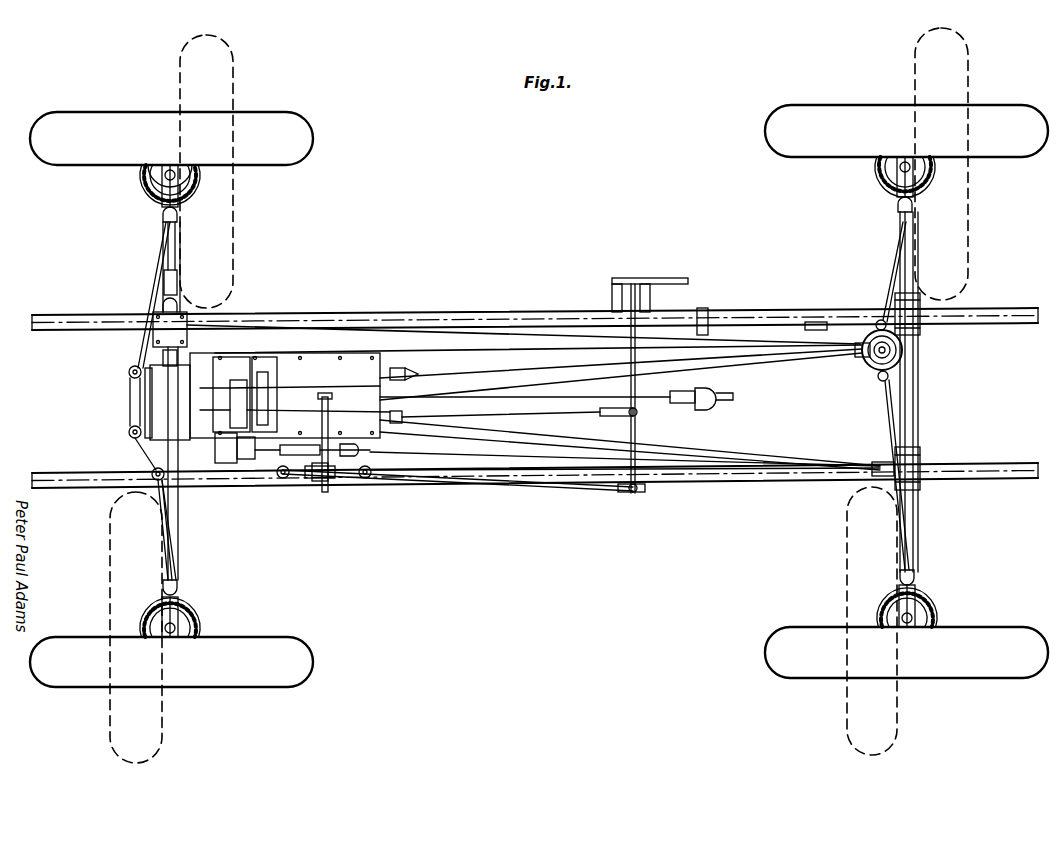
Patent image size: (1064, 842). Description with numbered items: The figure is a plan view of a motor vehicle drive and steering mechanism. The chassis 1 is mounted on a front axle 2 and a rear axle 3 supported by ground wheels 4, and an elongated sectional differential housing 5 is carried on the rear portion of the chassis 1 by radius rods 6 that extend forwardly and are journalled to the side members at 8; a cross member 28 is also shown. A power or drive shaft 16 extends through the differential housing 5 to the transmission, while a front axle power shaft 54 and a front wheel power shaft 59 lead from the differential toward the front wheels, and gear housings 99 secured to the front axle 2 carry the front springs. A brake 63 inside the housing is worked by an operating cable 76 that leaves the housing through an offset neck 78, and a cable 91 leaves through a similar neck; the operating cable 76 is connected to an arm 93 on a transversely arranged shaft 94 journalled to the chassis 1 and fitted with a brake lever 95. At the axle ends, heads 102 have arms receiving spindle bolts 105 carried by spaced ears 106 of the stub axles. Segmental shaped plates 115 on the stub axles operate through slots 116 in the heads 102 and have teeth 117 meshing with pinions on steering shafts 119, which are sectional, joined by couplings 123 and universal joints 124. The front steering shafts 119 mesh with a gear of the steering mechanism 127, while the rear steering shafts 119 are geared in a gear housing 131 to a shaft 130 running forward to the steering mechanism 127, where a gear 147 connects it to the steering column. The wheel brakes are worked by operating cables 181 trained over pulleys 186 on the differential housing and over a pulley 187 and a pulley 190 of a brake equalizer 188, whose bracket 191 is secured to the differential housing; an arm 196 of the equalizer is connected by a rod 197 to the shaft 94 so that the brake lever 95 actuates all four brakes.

The chassis 1 is at (770, 312).
The front axle 2 is at (918, 550).
The rear axle 3 is at (180, 553).
The ground wheels 4 is at (280, 115).
The differential housing 5 is at (352, 362).
The radius rods 6 is at (505, 348).
The radius rod journal 8 is at (708, 318).
The power or drive shaft 16 is at (590, 397).
The frame cross member 28 is at (290, 488).
The front axle power shaft 54 is at (812, 322).
The front wheel power shaft 59 is at (825, 472).
The brake 63 is at (235, 378).
The operating cable 76 is at (300, 384).
The offset neck 78 is at (235, 395).
The cable 91 is at (392, 370).
The arm 93 is at (640, 416).
The transversely arranged shaft 94 is at (645, 488).
The brake lever 95 is at (688, 280).
The gear housings 99 is at (922, 330).
The heads 102 is at (185, 200).
The spindle bolts 105 is at (163, 172).
The spaced ears 106 is at (185, 172).
The segmental shaped plates 115 is at (880, 185).
The slots 116 is at (200, 185).
The teeth 117 is at (150, 192).
The steering shafts 119 is at (165, 250).
The couplings 123 is at (880, 302).
The universal joints 124 is at (913, 208).
The steering mechanism 127 is at (903, 355).
The shaft 130 is at (233, 325).
The gear housing 131 is at (152, 330).
The gear 147 is at (865, 360).
The operating cable 181 is at (160, 290).
The pulleys 186 is at (130, 432).
The pulley 187 is at (283, 480).
The brake equalizer 188 is at (320, 480).
The pulley 190 is at (368, 478).
The bracket 191 is at (325, 495).
The arm 196 is at (370, 462).
The rod 197 is at (505, 495).